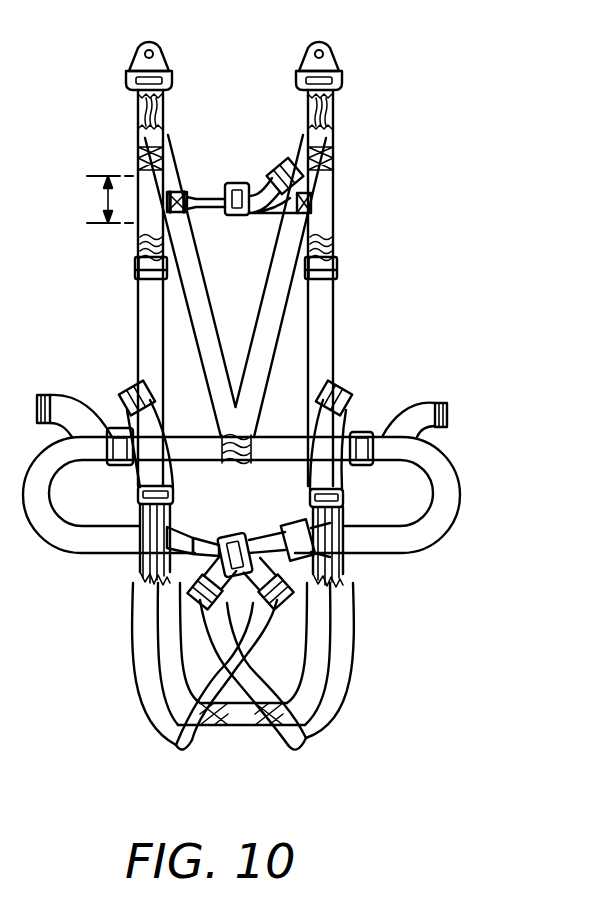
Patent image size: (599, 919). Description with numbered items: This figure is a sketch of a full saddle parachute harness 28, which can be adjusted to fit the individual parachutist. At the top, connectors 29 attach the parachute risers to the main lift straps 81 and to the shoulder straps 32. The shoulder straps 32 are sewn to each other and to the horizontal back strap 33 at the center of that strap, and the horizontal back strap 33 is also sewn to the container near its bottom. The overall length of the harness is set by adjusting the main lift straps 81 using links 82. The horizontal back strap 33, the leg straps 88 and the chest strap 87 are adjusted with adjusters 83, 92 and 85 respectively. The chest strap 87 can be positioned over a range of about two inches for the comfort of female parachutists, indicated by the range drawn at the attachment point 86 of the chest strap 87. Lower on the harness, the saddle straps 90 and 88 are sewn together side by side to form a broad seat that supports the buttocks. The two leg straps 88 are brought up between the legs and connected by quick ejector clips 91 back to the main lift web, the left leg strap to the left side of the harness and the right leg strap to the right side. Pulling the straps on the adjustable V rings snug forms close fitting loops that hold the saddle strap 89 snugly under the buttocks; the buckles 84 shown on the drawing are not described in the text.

The harness 28 is at (355, 655).
The connectors 29 is at (170, 44).
The shoulder straps 32 is at (177, 160).
The horizontal back strap 33 is at (461, 487).
The main lift straps 81 is at (335, 122).
The links 82 is at (345, 270).
The adjusters 83 is at (113, 428).
The leg strap buckle 84 is at (344, 494).
The adjusters 85 is at (236, 182).
The attachment point 86 is at (107, 198).
The chest strap 87 is at (236, 215).
The leg straps 88 is at (213, 640).
The saddle strap 89 is at (243, 740).
The saddle straps 90 is at (133, 655).
The quick ejector clips 91 is at (357, 553).
The adjusters 92 is at (226, 545).